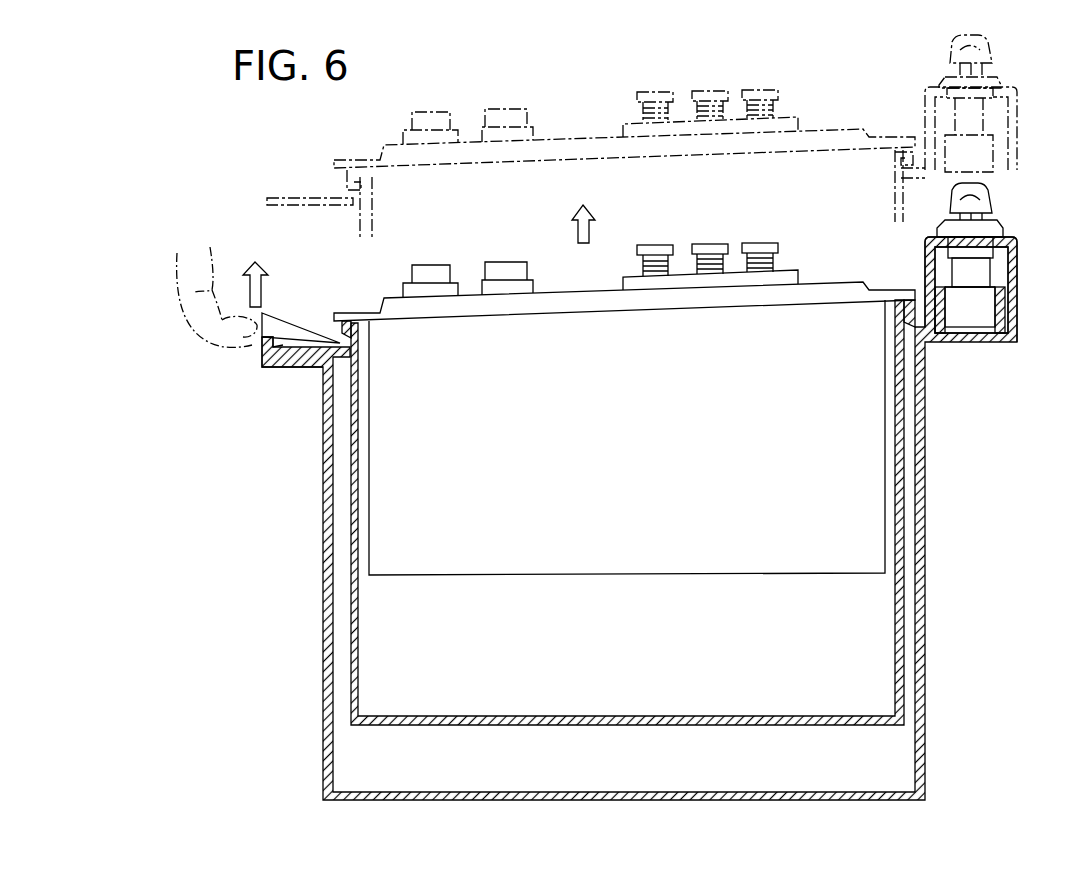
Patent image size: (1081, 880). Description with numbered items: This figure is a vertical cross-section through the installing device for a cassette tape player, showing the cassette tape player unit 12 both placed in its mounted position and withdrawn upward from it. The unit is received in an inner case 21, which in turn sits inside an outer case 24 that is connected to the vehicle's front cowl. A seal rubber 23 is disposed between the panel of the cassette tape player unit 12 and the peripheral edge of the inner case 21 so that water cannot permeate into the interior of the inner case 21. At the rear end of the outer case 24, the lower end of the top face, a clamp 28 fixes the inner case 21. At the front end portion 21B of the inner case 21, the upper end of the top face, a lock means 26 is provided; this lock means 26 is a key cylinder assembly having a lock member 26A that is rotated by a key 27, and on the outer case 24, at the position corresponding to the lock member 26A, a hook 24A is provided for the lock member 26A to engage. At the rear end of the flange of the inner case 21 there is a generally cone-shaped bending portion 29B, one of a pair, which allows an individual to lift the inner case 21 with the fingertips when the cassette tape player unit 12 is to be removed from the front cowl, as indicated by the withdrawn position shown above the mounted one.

The cassette tape player unit 12 is at (611, 560).
The inner case 21 is at (354, 540).
The front end portion 21B is at (1013, 237).
The seal rubber 23 is at (342, 328).
The outer case 24 is at (927, 679).
The hook 24A is at (950, 297).
The lock means 26 is at (977, 272).
The lock member 26A is at (942, 296).
The key 27 is at (951, 200).
The clamp 28 is at (268, 352).
The bending portion 29B is at (282, 328).